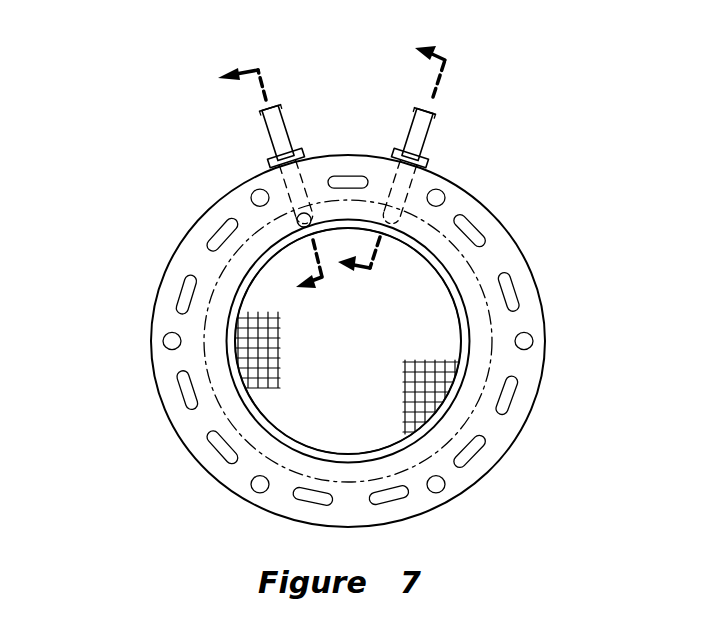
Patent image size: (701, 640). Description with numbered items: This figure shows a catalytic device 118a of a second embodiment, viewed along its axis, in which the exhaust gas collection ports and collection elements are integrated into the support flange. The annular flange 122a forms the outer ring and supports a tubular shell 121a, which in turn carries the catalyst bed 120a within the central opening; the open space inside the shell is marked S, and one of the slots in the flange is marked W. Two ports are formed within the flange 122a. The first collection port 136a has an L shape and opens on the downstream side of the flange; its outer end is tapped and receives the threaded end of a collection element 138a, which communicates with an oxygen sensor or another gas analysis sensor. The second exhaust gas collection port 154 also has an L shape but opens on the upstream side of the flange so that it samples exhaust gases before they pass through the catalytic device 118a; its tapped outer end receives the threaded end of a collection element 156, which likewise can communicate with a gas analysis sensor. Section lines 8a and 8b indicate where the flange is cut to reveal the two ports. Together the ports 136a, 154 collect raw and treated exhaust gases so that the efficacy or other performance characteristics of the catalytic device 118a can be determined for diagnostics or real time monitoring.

The section line 8a is at (265, 180).
The section line 8b is at (406, 159).
The catalytic device 118a is at (278, 423).
The catalyst bed 120a is at (268, 308).
The tubular shell 121a is at (227, 347).
The flange 122a is at (528, 262).
The collection port 136a is at (282, 153).
The collection element 138a is at (265, 132).
The exhaust gas collection port 154 is at (412, 152).
The collection element 156 is at (438, 123).
The space S is at (363, 375).
The slot W is at (520, 388).